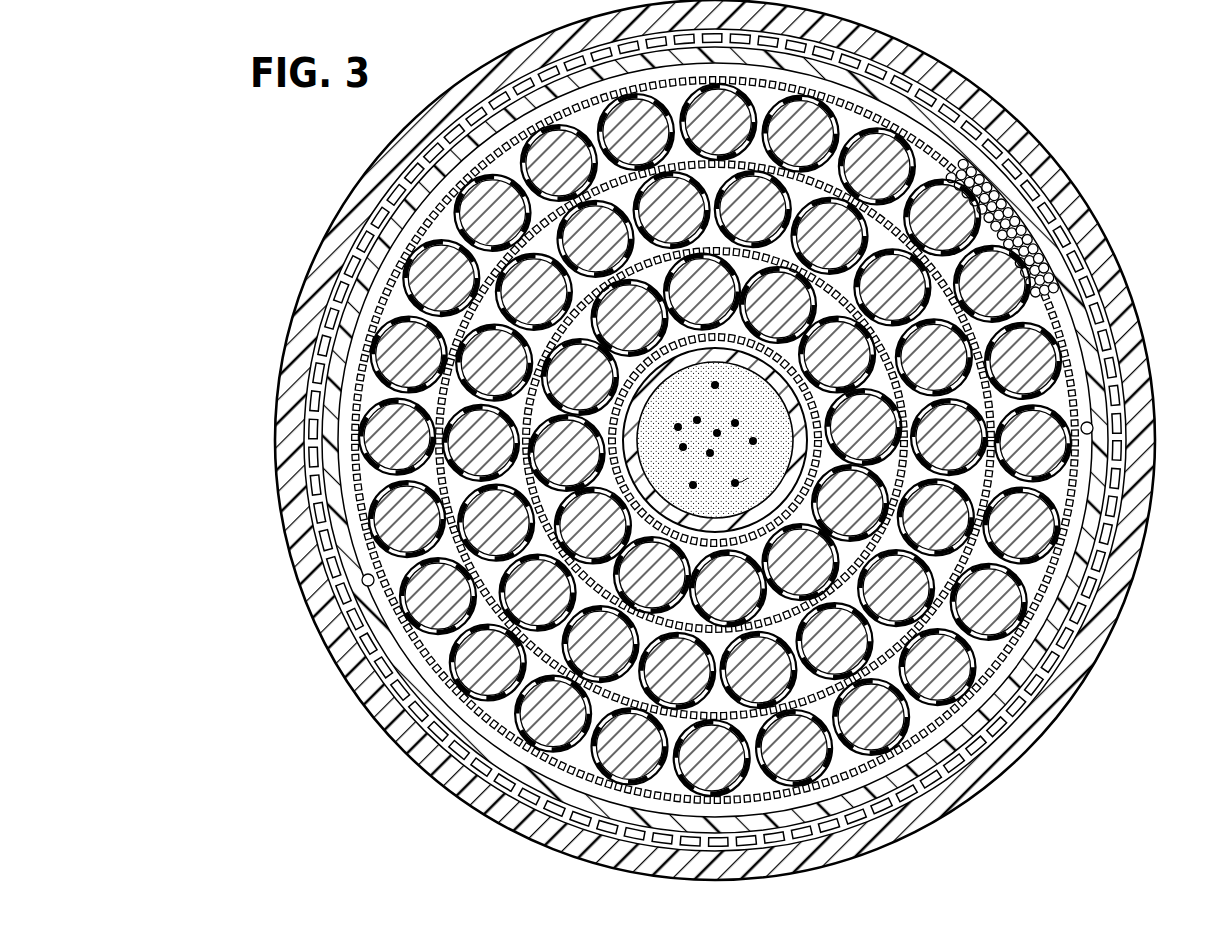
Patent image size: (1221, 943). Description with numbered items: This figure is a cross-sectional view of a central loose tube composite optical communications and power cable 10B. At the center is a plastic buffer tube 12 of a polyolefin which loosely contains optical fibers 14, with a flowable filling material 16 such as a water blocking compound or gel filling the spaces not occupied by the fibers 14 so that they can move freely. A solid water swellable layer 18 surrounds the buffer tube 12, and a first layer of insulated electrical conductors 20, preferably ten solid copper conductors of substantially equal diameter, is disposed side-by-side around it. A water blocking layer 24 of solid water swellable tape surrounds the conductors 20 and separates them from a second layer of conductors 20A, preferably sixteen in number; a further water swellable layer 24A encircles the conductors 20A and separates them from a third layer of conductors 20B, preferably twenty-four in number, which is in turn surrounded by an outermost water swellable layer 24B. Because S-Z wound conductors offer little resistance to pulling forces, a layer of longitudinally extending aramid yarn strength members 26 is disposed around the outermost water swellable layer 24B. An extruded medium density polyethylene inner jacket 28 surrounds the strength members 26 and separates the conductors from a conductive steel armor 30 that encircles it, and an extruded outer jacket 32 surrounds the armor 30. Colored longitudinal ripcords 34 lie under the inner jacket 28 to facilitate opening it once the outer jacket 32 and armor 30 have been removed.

The composite cable 10B is at (985, 83).
The central buffer tube 12 is at (714, 440).
The optical fibers 14 is at (753, 441).
The filling material 16 is at (764, 411).
The water swellable layer 18 is at (621, 462).
The electrical conductors 20 is at (420, 628).
The second layer of electrical conductors 20A is at (483, 445).
The third layer of electrical conductors 20B is at (460, 693).
The water blocking layer 24 is at (628, 386).
The water swellable layer 24A is at (460, 328).
The water swellable layer 24B is at (417, 232).
The strength members 26 is at (1005, 208).
The inner jacket 28 is at (1085, 550).
The conductive armor 30 is at (1117, 482).
The outer jacket 32 is at (385, 168).
The ripcords 34 is at (362, 584).